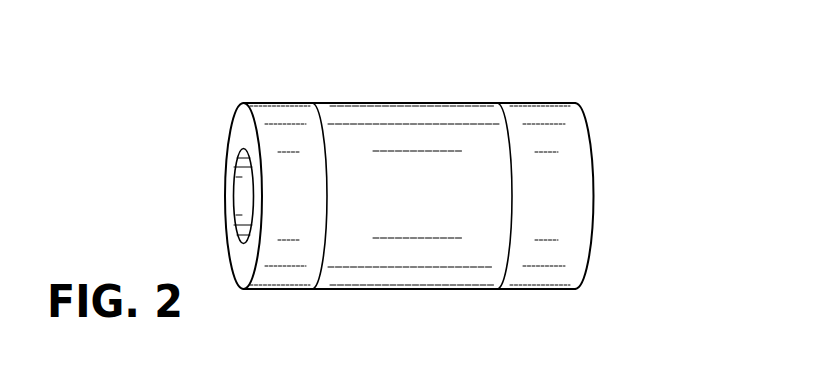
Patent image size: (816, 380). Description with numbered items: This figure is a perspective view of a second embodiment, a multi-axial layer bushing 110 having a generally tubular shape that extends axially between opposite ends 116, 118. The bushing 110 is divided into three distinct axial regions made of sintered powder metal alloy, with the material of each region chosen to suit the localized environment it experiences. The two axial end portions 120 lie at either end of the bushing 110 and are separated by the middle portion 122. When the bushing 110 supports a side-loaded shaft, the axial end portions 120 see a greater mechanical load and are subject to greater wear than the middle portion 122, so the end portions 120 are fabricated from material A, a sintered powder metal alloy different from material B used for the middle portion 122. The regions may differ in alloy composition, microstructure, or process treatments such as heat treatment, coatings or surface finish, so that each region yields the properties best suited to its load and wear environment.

The multi-axial layer bushing 110 is at (620, 94).
The end 116 is at (250, 137).
The end 118 is at (593, 193).
The axial end portion 120 is at (286, 102).
The middle portion 122 is at (413, 102).
The material A is at (288, 273).
The material B is at (435, 273).